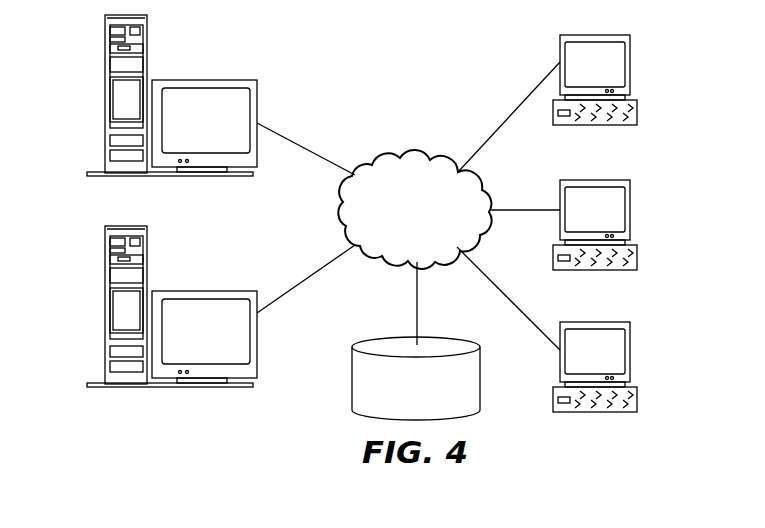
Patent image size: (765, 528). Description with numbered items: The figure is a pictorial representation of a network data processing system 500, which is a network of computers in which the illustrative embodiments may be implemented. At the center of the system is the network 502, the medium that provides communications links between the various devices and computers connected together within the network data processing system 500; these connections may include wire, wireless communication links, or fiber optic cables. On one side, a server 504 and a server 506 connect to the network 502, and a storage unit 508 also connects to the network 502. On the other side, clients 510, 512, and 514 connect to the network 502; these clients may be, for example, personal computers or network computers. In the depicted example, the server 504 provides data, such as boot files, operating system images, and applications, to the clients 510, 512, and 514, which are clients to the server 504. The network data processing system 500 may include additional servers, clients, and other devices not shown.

The network data processing system 500 is at (470, 52).
The network 502 is at (388, 158).
The server 504 is at (105, 97).
The server 506 is at (105, 308).
The storage unit 508 is at (352, 390).
The client 510 is at (630, 65).
The client 512 is at (630, 210).
The client 514 is at (630, 350).